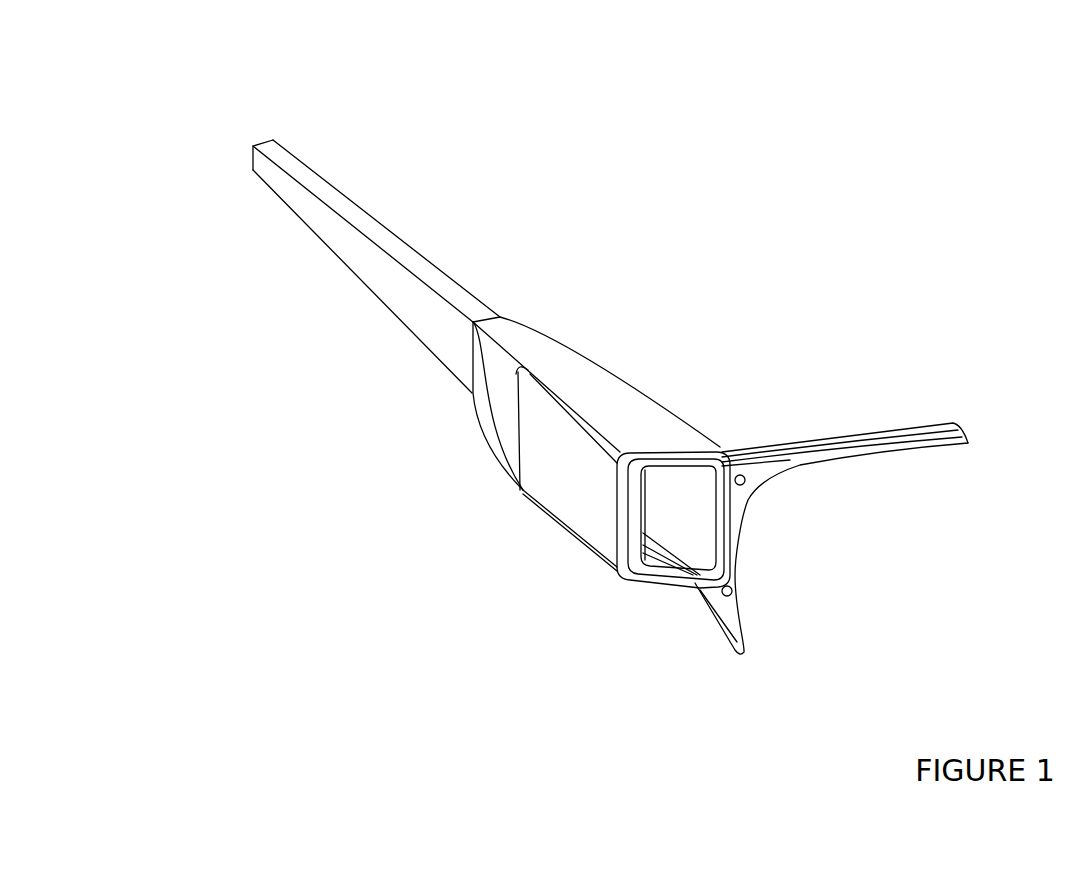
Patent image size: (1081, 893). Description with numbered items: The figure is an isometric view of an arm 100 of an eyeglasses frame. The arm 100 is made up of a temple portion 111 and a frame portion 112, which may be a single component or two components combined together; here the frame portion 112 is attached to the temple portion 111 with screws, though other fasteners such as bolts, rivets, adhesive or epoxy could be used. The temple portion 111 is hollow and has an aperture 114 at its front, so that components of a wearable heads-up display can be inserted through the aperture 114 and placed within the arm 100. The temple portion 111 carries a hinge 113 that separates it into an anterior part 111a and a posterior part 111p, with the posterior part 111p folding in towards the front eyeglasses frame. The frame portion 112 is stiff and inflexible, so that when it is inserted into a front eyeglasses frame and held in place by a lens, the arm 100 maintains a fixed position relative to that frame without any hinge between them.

The arm 100 is at (122, 108).
The temple portion 111 is at (147, 248).
The posterior part 111p is at (218, 185).
The anterior part 111a is at (448, 438).
The frame portion 112 is at (1006, 637).
The hinge 113 is at (497, 317).
The aperture 114 is at (675, 482).